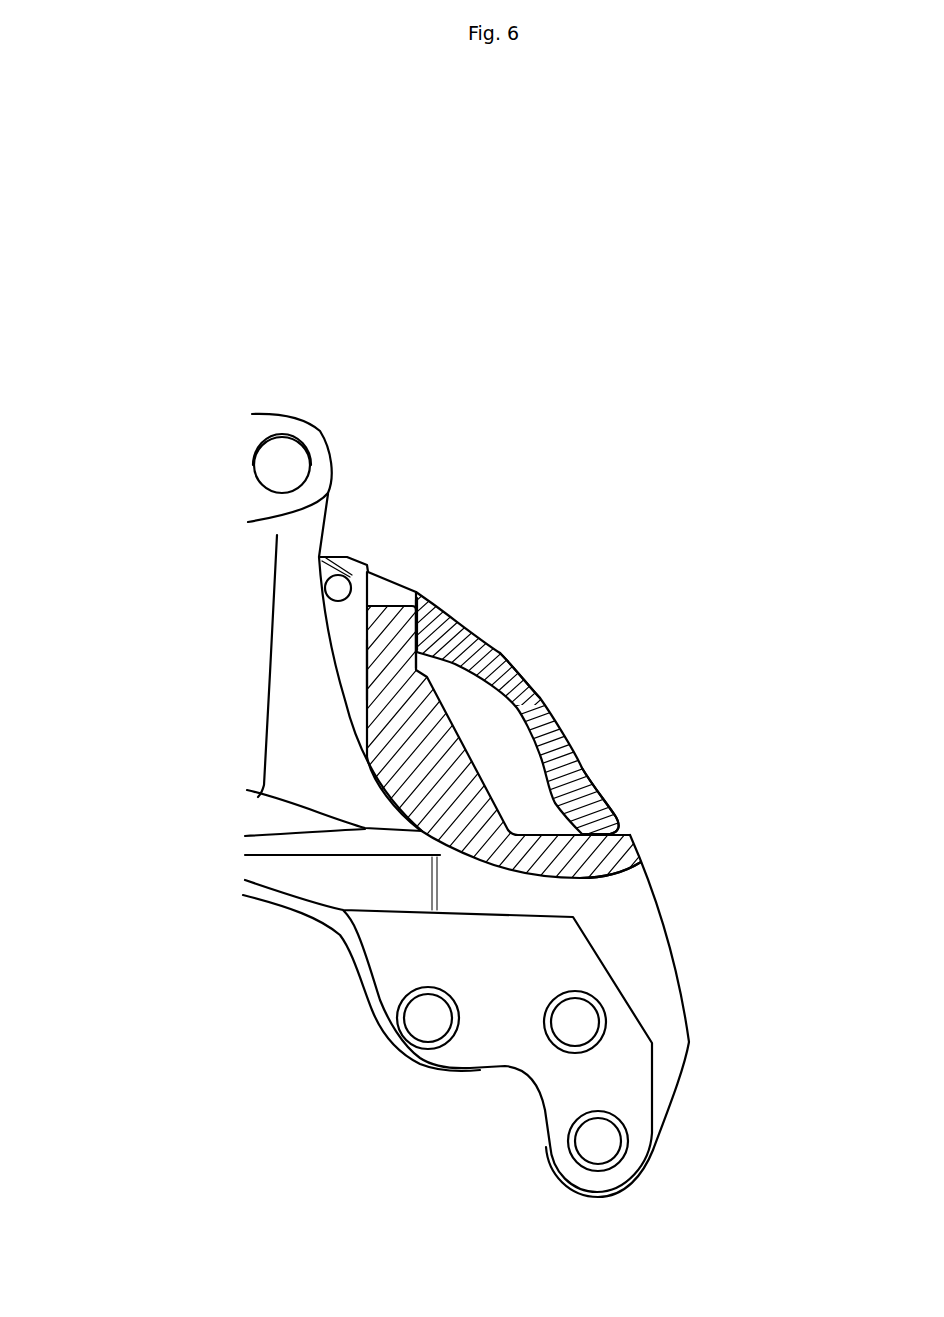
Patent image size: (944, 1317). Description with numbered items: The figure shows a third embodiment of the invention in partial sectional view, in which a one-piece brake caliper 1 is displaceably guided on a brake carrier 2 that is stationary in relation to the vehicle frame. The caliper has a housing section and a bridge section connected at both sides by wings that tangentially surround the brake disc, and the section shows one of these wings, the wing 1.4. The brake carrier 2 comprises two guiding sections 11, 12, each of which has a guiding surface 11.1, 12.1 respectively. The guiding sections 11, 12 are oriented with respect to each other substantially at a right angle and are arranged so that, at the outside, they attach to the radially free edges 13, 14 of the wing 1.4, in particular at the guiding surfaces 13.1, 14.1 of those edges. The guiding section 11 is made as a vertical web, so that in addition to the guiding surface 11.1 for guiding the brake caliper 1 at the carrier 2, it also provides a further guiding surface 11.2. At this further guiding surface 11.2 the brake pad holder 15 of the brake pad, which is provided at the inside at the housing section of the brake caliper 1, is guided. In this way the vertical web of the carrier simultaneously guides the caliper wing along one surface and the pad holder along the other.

The brake caliper 1 is at (262, 427).
The wing 1.4 is at (517, 672).
The brake carrier 2 is at (567, 1088).
The guiding section 11 is at (367, 692).
The guiding surface 11.1 is at (415, 620).
The further guiding surface 11.2 is at (396, 640).
The guiding section 12 is at (597, 878).
The guiding surface 12.1 is at (597, 877).
The radially free edge 13 is at (437, 634).
The guiding surface 13.1 is at (416, 595).
The radially free edge 14 is at (585, 820).
The guiding surface 14.1 is at (583, 832).
The brake pad holder 15 is at (333, 612).